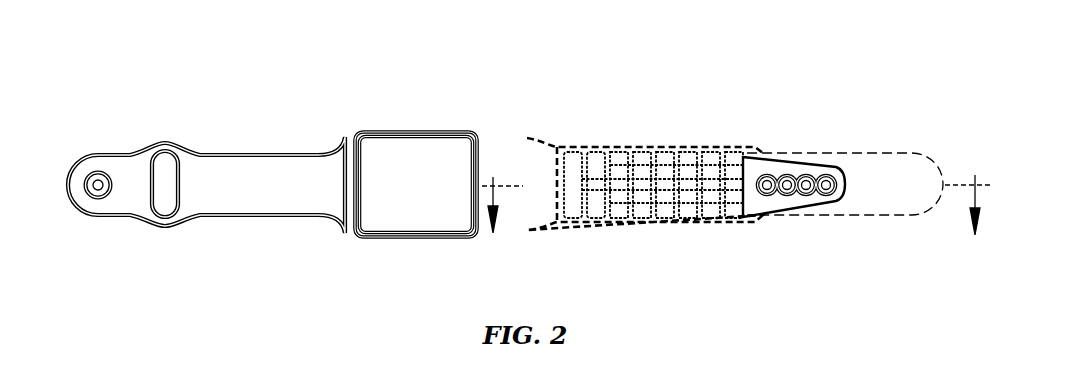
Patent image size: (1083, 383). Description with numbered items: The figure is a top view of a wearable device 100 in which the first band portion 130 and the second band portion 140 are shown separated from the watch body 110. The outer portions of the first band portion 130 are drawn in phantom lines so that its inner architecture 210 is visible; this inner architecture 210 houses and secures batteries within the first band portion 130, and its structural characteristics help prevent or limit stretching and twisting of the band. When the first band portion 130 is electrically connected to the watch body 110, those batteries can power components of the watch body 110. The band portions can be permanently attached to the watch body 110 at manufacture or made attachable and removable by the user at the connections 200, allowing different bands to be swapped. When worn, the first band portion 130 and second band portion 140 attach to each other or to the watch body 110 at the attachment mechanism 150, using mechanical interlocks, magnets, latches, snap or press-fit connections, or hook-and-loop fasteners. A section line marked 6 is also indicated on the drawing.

The wearable device 100 is at (380, 93).
The watch body 110 is at (383, 227).
The first band portion 130 is at (855, 137).
The second band portion 140 is at (233, 200).
The attachment mechanism 150 is at (100, 175).
The connections 200 is at (505, 182).
The inner architecture 210 is at (667, 232).
The section line 6- 6 is at (737, 219).